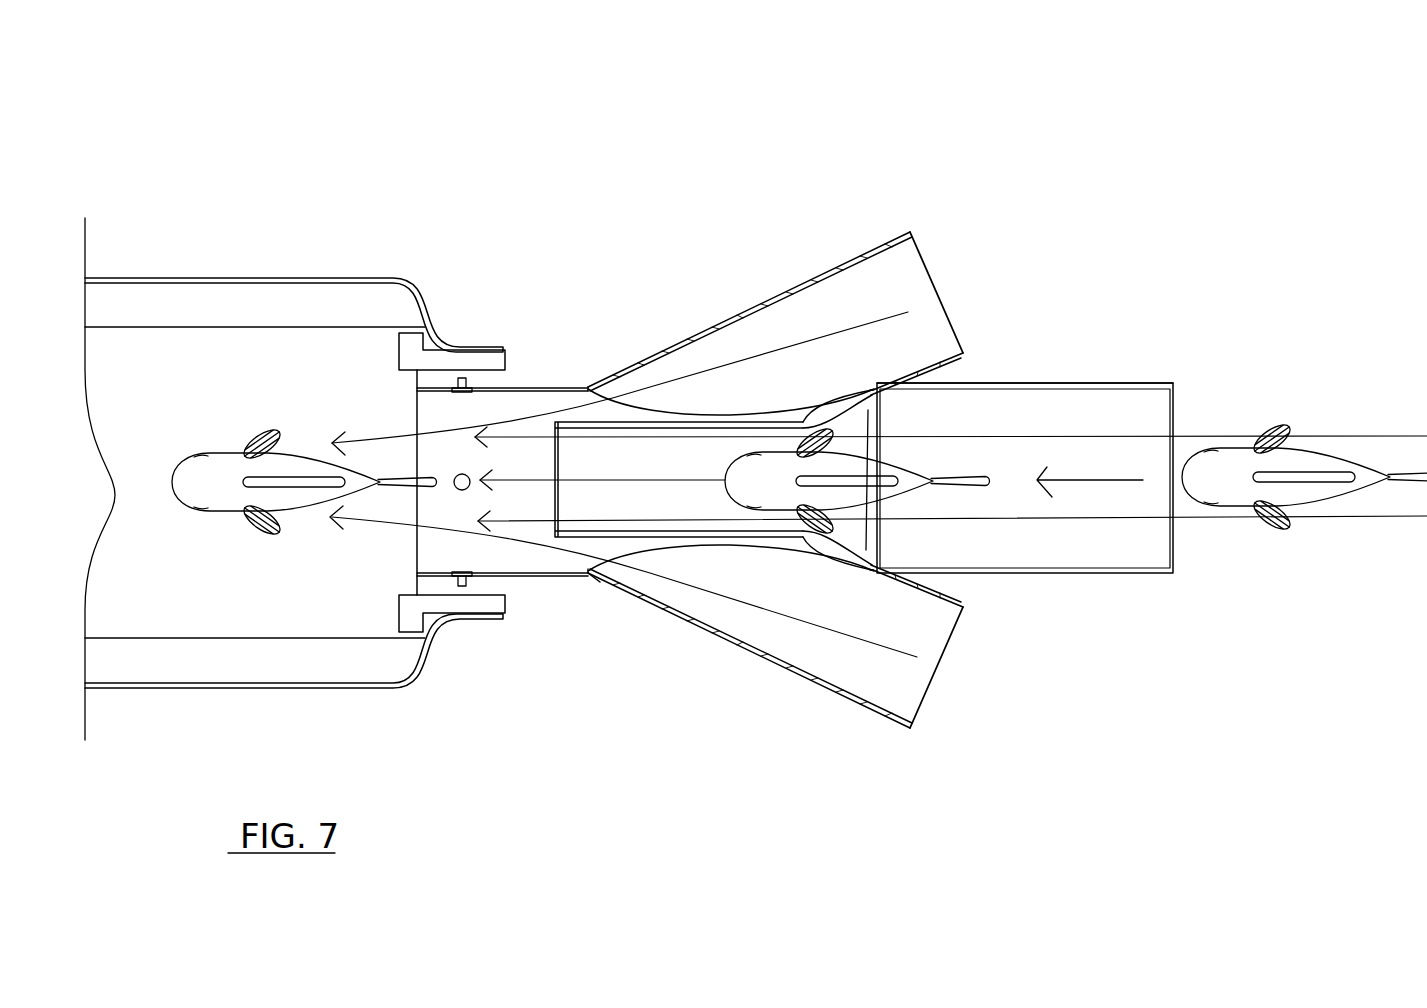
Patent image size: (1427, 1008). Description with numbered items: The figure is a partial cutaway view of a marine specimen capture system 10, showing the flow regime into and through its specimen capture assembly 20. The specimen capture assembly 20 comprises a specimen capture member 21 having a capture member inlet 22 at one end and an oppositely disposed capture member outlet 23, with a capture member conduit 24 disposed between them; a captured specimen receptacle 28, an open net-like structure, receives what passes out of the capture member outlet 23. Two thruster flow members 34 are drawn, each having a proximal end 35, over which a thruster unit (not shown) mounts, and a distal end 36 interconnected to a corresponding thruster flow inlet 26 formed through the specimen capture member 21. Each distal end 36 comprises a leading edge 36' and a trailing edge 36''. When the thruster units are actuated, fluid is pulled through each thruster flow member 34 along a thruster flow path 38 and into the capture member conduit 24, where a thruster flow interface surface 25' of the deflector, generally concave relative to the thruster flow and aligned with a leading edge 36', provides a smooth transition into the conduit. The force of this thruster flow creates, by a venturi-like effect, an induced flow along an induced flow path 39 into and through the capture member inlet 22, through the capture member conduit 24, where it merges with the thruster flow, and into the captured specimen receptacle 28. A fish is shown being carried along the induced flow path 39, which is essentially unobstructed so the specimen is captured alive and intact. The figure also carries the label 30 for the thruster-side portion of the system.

The marine specimen capture system 10 is at (1092, 163).
The specimen capture assembly 20 is at (937, 517).
The specimen capture member 21 is at (1097, 387).
The capture member inlet 22 is at (1178, 553).
The capture member outlet 23 is at (413, 553).
The capture member conduit 24 is at (1103, 550).
The thruster flow interface surface 25' is at (969, 470).
The thruster flow inlet 26 is at (626, 369).
The captured specimen receptacle 28 is at (365, 688).
The funnel assembly 30 is at (688, 524).
The thruster flow member 34 is at (735, 313).
The proximal end 35 is at (912, 238).
The distal end 36 is at (731, 486).
The leading edge 36' is at (924, 574).
The trailing edge 36'' is at (590, 614).
The thruster flow path 38 is at (822, 338).
The induced flow path 39 is at (655, 470).